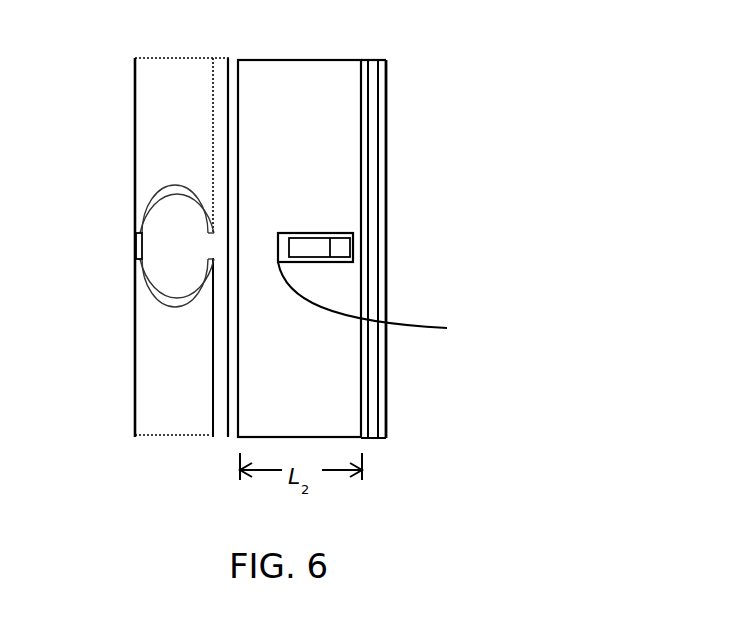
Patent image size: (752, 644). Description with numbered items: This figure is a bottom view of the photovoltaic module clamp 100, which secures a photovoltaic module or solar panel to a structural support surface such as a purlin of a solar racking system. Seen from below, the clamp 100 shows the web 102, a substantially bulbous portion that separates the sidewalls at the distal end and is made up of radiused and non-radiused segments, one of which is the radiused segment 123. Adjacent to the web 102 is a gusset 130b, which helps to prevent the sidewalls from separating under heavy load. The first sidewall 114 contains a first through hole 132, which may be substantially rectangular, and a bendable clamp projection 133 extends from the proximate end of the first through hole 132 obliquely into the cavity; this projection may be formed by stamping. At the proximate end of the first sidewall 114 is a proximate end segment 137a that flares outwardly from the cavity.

The photovoltaic module clamp 100 is at (477, 162).
The web 102 is at (133, 155).
The first sidewall 114 is at (315, 69).
The radiused segment 123 is at (184, 69).
The gusset 130b is at (163, 267).
The first through hole 132 is at (381, 305).
The clamp projection 133 is at (323, 249).
The proximate end segment 137a is at (388, 424).